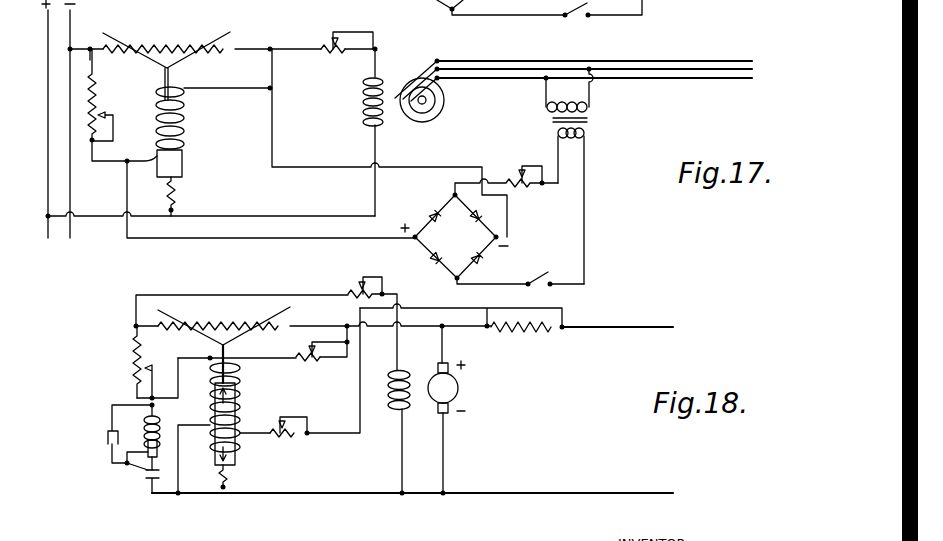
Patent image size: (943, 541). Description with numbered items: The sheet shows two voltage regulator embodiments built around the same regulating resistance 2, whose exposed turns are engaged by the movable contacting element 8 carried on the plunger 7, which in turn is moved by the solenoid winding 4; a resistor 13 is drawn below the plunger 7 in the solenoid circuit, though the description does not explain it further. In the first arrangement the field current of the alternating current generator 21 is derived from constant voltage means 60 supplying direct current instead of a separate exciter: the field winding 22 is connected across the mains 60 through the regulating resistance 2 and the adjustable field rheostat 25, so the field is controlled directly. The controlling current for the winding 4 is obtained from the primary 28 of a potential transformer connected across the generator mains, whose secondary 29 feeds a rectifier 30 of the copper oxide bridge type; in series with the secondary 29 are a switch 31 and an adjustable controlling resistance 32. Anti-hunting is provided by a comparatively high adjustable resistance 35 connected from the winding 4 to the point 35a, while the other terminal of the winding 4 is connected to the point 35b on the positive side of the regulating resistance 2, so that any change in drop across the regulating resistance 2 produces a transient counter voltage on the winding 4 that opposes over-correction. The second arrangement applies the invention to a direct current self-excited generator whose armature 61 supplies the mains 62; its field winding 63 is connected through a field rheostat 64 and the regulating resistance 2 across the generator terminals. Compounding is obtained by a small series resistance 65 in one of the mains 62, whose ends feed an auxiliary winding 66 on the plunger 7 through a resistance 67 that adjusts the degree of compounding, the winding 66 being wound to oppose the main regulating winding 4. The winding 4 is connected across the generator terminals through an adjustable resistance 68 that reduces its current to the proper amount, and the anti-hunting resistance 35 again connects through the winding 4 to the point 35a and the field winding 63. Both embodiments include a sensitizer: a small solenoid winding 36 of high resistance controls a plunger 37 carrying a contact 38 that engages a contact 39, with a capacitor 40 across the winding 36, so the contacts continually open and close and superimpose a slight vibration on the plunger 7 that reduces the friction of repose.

In FIG. 17, the regulating resistance 2 is at (176, 48).
In FIG. 18, the regulating resistance 2 is at (232, 325).
In FIG. 17, the solenoid winding 4 is at (185, 119).
In FIG. 18, the solenoid winding 4 is at (240, 378).
In FIG. 17, the plunger 7 is at (173, 170).
In FIG. 18, the plunger 7 is at (238, 458).
In FIG. 17, the movable contacting element 8 is at (178, 61).
In FIG. 18, the movable contacting element 8 is at (237, 338).
In FIG. 17, the resistor 13 is at (176, 196).
In FIG. 18, the resistor 13 is at (232, 478).
In FIG. 17, the generator 21 is at (443, 107).
In FIG. 17, the field winding 22 is at (364, 106).
In FIG. 17, the adjustable field rheostat 25 is at (327, 48).
In FIG. 17, the primary of potential transformer 28 is at (582, 100).
In FIG. 17, the secondary of potential transformer 29 is at (572, 140).
In FIG. 17, the rectifier 30 is at (454, 237).
In FIG. 17, the switch 31 is at (545, 281).
In FIG. 17, the adjustable controlling resistance 32 is at (516, 186).
In FIG. 17, the anti-hunting resistance 35 is at (97, 86).
In FIG. 18, the anti-hunting resistance 35 is at (132, 350).
In FIG. 17, the point 35a is at (90, 49).
In FIG. 18, the point 35a is at (136, 326).
In FIG. 17, the point 35b is at (282, 38).
In FIG. 18, the solenoid winding 36 is at (157, 420).
In FIG. 18, the plunger 37 is at (158, 452).
In FIG. 18, the contact 38 is at (153, 481).
In FIG. 18, the contact 39 is at (147, 472).
In FIG. 18, the capacitor 40 is at (107, 441).
In FIG. 17, the constant voltage means 60 is at (59, 101).
In FIG. 18, the armature 61 is at (458, 390).
In FIG. 18, the mains 62 is at (587, 489).
In FIG. 18, the field winding 63 is at (404, 376).
In FIG. 18, the field rheostat 64 is at (357, 286).
In FIG. 18, the series resistance 65 is at (520, 331).
In FIG. 18, the auxiliary winding 66 is at (215, 453).
In FIG. 18, the resistance 67 is at (281, 427).
In FIG. 18, the adjustable resistance 68 is at (313, 356).